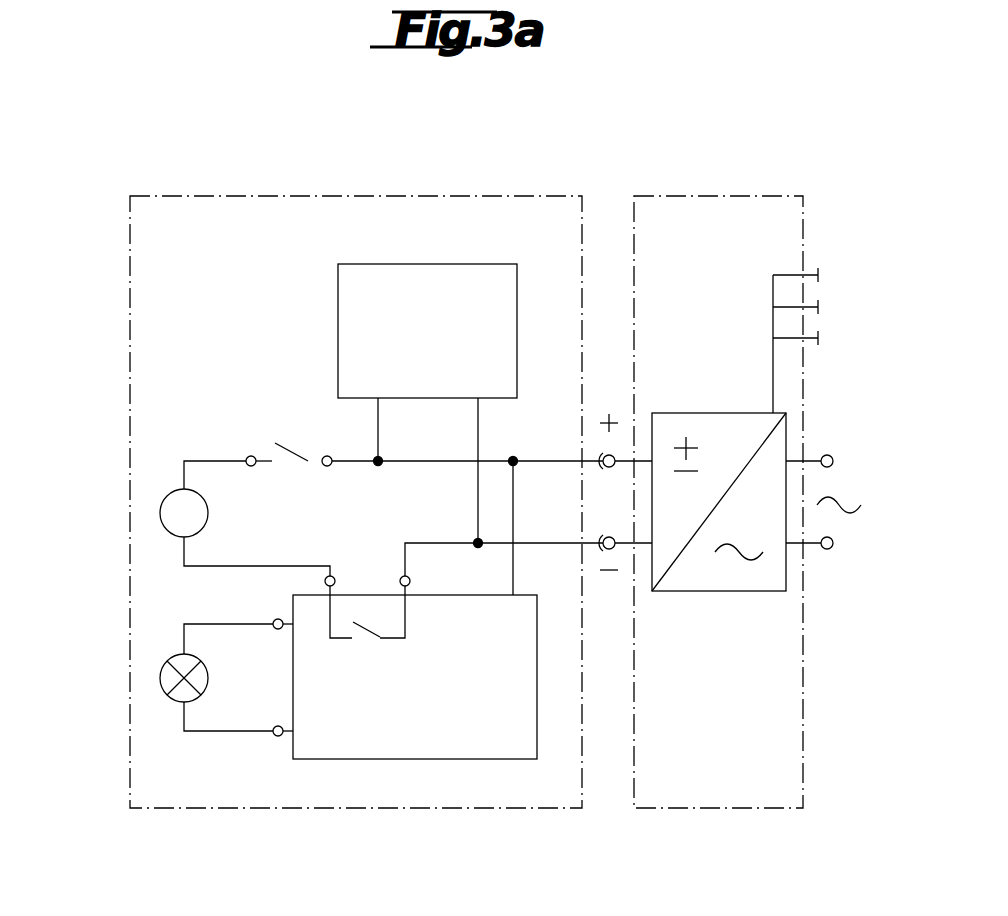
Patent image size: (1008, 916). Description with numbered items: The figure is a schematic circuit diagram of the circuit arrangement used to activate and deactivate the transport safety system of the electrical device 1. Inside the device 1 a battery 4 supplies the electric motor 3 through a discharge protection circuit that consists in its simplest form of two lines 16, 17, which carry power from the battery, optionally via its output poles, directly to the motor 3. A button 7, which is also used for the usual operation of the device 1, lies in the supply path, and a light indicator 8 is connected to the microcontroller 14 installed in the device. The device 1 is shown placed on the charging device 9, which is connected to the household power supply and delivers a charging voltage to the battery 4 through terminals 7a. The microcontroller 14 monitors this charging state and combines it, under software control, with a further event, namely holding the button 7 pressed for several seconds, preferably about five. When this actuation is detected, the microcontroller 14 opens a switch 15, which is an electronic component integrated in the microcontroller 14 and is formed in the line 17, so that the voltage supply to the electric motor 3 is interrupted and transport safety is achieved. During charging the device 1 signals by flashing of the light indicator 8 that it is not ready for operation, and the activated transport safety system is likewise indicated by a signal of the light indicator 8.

The electrical device 1 is at (349, 212).
The electric motor 3 is at (160, 513).
The battery 4 is at (458, 283).
The button 7 is at (288, 445).
The charger terminals 7a is at (822, 272).
The light indicator 8 is at (167, 680).
The charging device 9 is at (737, 206).
The microcontroller 14 is at (485, 733).
The switch 15 is at (352, 625).
The line 16 is at (377, 430).
The line 17 is at (478, 422).